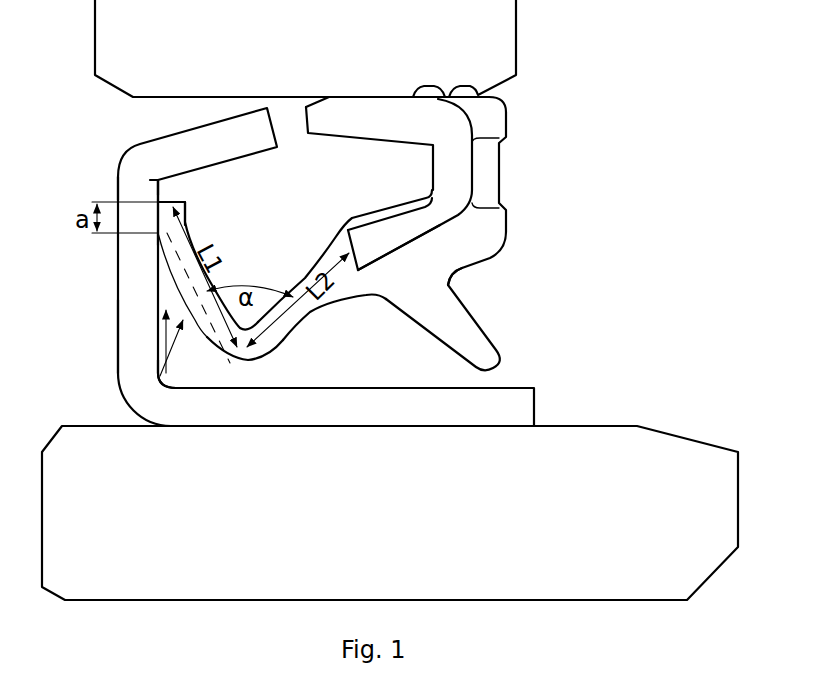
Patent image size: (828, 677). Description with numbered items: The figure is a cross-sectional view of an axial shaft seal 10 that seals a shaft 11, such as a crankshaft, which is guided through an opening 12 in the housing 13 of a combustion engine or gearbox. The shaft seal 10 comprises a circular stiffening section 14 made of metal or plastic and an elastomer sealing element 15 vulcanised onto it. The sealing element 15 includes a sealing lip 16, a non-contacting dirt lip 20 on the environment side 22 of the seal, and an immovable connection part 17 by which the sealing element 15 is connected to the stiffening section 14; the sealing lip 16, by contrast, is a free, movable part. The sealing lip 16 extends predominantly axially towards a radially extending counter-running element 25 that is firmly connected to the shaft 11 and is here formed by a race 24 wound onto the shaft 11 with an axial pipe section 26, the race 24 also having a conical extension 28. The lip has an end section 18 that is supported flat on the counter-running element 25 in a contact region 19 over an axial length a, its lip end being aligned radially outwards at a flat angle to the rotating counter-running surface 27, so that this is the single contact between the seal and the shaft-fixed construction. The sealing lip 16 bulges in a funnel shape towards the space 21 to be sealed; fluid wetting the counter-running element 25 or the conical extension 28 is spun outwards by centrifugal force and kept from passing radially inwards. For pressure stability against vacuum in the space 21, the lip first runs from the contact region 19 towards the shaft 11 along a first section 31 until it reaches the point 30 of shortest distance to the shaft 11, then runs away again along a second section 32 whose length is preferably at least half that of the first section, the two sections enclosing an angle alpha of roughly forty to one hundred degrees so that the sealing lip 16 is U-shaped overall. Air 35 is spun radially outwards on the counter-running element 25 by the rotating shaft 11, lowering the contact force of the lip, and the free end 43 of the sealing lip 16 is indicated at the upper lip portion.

The axial shaft seal 10 is at (541, 223).
The shaft 11 is at (380, 538).
The opening 12 is at (108, 280).
The housing 13 is at (300, 46).
The stiffening section 14 is at (444, 162).
The sealing element 15 is at (338, 316).
The sealing lip 16 is at (150, 376).
The connection part 17 is at (419, 265).
The end section 18 is at (170, 218).
The contact region 19 is at (157, 220).
The dirt lip 20 is at (479, 347).
The space to be sealed 21 is at (95, 385).
The environment side 22 is at (613, 310).
The race 24 is at (108, 338).
The counter-running element 25 is at (138, 297).
The axial pipe section 26 is at (323, 408).
The counter-running surface 27 is at (163, 190).
The conical extension 28 is at (213, 138).
The point of shortest distance 30 is at (251, 354).
The section running towards the shaft 31 is at (208, 290).
The section running away from the shaft 32 is at (282, 333).
The air 35 is at (160, 377).
The free end 43 is at (186, 200).